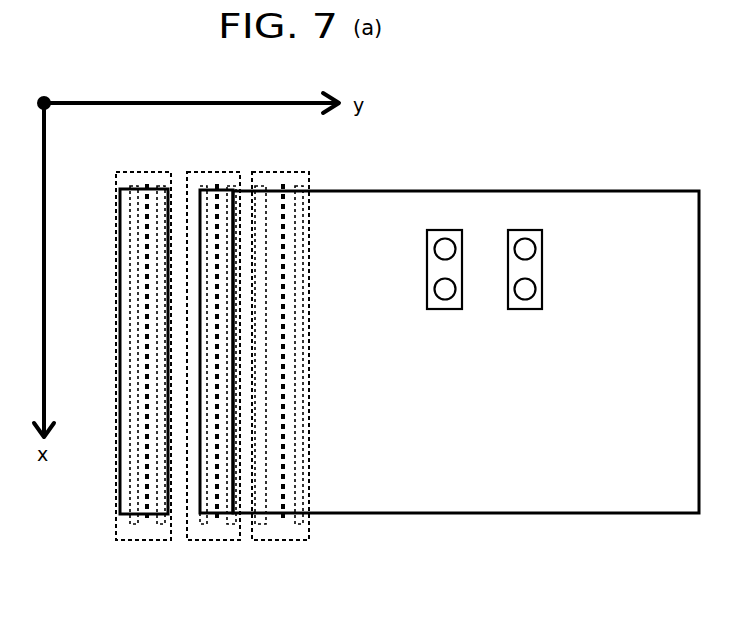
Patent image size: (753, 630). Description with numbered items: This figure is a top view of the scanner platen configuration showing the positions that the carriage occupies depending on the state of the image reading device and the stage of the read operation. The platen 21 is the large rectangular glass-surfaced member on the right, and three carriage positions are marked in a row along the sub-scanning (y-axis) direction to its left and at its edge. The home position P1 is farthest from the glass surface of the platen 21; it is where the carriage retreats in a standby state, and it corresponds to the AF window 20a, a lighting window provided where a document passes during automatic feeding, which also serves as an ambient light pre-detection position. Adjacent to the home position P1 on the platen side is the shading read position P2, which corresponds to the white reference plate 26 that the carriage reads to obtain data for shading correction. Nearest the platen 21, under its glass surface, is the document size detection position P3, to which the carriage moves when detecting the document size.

The platen 21 is at (513, 507).
The white reference plate 26 is at (223, 190).
The AF window 20a is at (121, 509).
The home position P1 is at (171, 551).
The shading read position P2 is at (240, 551).
The document size detection position P3 is at (309, 551).